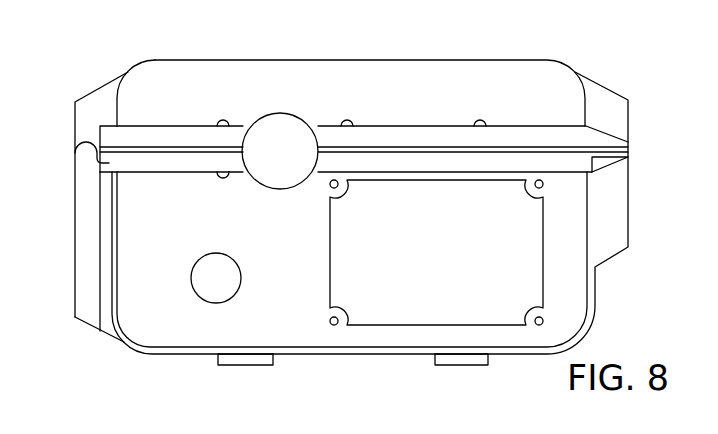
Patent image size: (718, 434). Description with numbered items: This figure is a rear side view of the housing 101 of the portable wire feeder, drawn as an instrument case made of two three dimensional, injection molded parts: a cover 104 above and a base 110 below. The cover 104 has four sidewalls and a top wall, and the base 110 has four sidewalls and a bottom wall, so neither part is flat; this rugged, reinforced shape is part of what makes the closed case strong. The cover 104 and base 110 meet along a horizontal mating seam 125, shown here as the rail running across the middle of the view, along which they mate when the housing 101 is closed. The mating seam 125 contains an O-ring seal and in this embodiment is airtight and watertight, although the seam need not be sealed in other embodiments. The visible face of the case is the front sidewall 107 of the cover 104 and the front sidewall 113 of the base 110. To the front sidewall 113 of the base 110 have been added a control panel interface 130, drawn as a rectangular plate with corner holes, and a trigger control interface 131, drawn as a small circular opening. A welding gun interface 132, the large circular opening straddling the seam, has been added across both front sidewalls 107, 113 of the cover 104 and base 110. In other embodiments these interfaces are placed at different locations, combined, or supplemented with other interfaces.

The housing 101 is at (612, 71).
The cover 104 is at (192, 58).
The front sidewall of cover 107 is at (142, 82).
The base 110 is at (209, 357).
The front sidewall of base 113 is at (137, 303).
The mating seam 125 is at (378, 147).
The control panel interface 130 is at (513, 262).
The trigger control interface 131 is at (208, 292).
The welding gun interface 132 is at (295, 135).